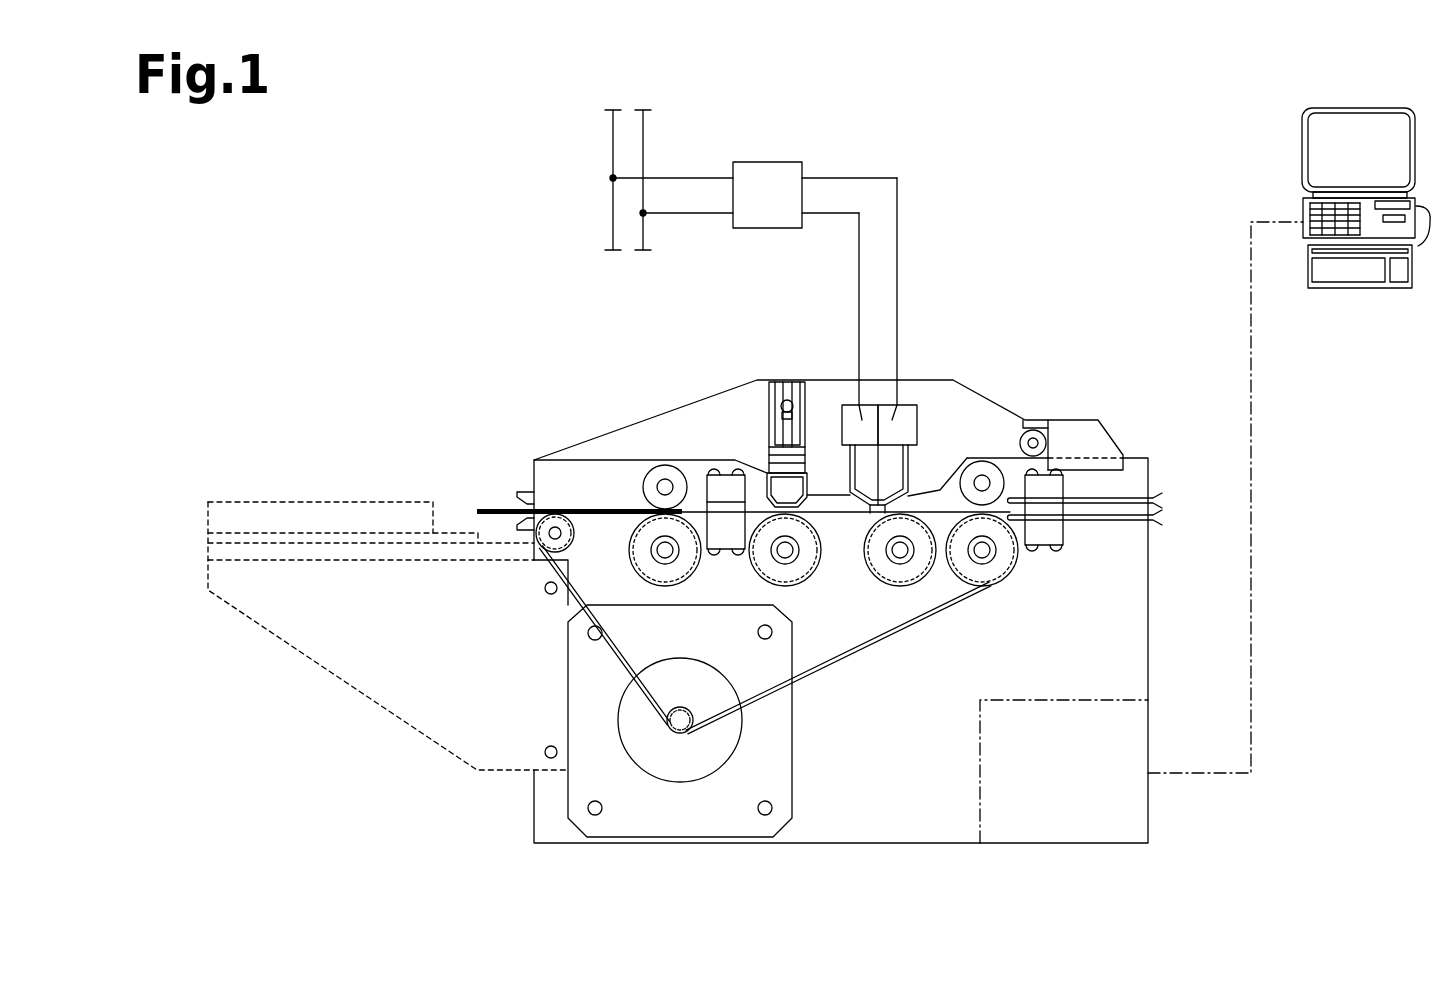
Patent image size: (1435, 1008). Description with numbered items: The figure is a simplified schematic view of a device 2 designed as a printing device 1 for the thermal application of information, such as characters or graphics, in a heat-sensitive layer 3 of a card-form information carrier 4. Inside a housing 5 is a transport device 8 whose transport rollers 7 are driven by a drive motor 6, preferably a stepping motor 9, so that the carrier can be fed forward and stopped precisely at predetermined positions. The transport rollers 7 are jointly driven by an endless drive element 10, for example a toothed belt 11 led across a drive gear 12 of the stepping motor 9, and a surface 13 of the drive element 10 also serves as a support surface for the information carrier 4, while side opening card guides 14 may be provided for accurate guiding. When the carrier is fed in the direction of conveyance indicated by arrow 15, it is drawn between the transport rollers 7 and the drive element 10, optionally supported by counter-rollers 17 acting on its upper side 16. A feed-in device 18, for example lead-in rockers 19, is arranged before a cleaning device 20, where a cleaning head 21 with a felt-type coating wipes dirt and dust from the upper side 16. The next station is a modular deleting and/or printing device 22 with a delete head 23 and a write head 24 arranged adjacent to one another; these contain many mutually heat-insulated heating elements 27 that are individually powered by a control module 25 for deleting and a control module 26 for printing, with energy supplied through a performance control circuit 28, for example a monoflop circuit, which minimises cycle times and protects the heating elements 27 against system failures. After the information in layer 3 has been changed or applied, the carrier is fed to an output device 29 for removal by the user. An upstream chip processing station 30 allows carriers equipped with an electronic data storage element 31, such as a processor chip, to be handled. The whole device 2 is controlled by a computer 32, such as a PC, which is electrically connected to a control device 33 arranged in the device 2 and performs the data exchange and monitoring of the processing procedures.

The printing device 1 is at (1068, 203).
The device 2 is at (518, 222).
The heat-sensitive layer 3 is at (492, 512).
The information carrier 4 is at (483, 494).
The housing 5 is at (1127, 553).
The drive motor 6 is at (628, 805).
The transport rollers 7 is at (912, 572).
The transport device 8 is at (1045, 568).
The stepping motor 9 is at (705, 748).
The endless drive element 10 is at (920, 660).
The toothed belt 11 is at (858, 650).
The drive gear 12 is at (677, 723).
The surface 13 is at (590, 505).
The side opening card guides 14 is at (1100, 517).
The arrow 15 is at (480, 465).
The upper side 16 is at (623, 505).
The counter-rollers 17 is at (660, 478).
The feed-in device 18 is at (524, 447).
The lead-in rockers 19 is at (528, 522).
The cleaning device 20 is at (773, 368).
The cleaning head 21 is at (780, 487).
The deleting and/or printing device 22 is at (876, 332).
The delete head 23 is at (862, 473).
The write head 24 is at (890, 472).
The control module for deleting 25 is at (865, 420).
The control module for printing 26 is at (893, 420).
The heating elements 27 is at (865, 505).
The performance control circuit 28 is at (762, 190).
The output device 29 is at (1182, 504).
The chip processing station 30 is at (352, 470).
The electronic data storage element 31 is at (505, 490).
The computer 32 is at (1275, 187).
The control device 33 is at (1120, 748).